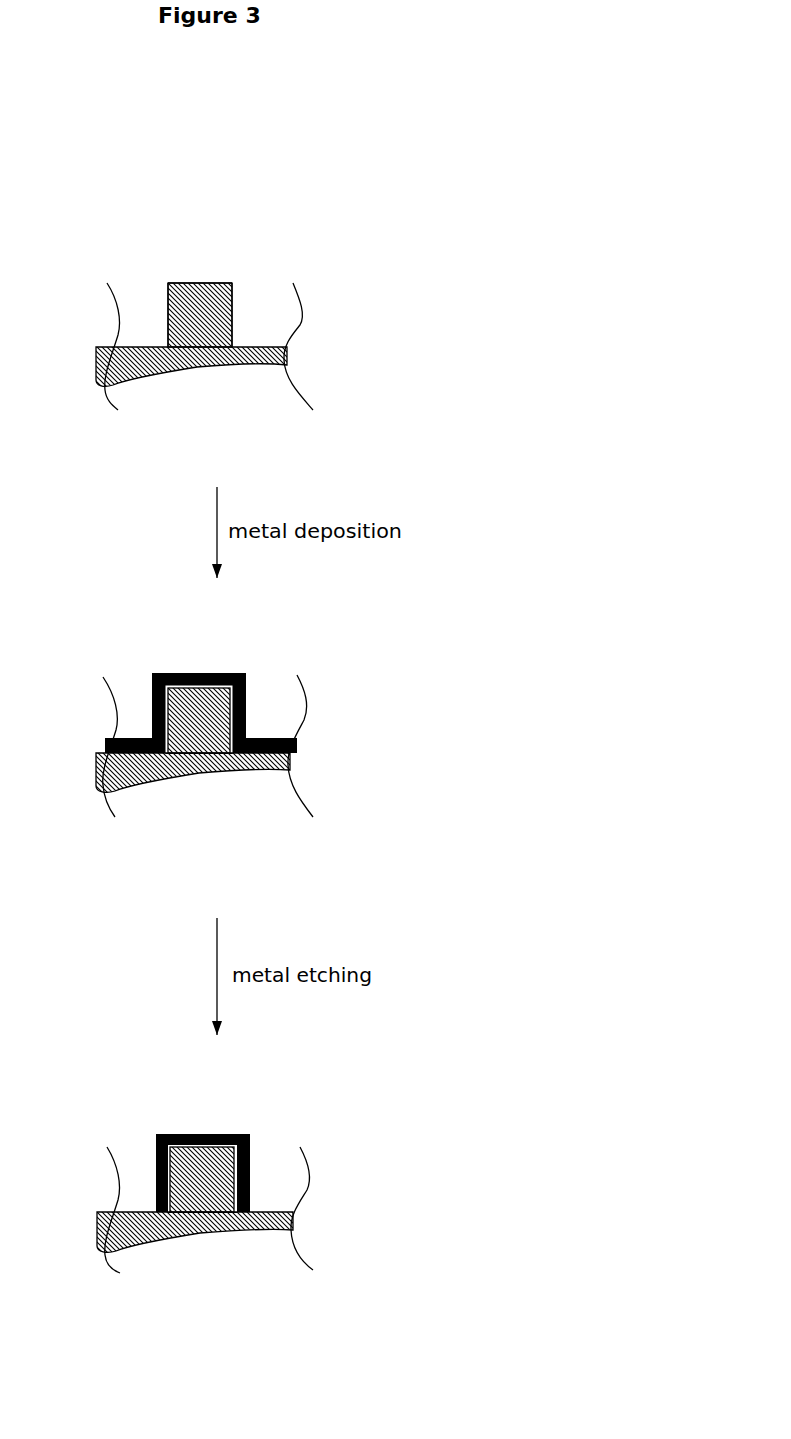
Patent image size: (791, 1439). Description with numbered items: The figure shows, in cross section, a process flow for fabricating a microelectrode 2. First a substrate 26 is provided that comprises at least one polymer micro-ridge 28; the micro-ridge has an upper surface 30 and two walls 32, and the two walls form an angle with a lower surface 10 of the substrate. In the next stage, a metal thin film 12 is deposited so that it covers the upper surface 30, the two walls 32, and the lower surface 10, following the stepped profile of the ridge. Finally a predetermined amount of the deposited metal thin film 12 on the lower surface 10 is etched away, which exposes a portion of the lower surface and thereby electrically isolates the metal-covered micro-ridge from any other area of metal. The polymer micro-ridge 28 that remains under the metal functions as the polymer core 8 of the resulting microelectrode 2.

The substrate 26 is at (288, 155).
The polymer micro-ridge 28 is at (190, 258).
The upper surface 30 is at (202, 280).
The walls 32 is at (237, 317).
The lower surface 10 is at (273, 343).
The metal thin film 12 is at (191, 677).
The microelectrode 2 is at (176, 1102).
The polymer core 8 is at (200, 1188).